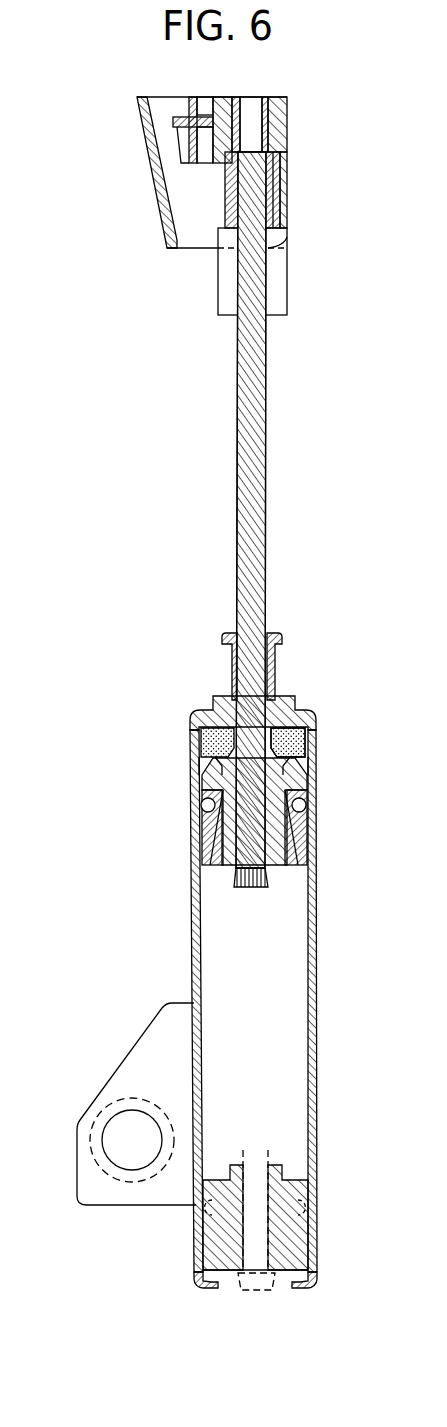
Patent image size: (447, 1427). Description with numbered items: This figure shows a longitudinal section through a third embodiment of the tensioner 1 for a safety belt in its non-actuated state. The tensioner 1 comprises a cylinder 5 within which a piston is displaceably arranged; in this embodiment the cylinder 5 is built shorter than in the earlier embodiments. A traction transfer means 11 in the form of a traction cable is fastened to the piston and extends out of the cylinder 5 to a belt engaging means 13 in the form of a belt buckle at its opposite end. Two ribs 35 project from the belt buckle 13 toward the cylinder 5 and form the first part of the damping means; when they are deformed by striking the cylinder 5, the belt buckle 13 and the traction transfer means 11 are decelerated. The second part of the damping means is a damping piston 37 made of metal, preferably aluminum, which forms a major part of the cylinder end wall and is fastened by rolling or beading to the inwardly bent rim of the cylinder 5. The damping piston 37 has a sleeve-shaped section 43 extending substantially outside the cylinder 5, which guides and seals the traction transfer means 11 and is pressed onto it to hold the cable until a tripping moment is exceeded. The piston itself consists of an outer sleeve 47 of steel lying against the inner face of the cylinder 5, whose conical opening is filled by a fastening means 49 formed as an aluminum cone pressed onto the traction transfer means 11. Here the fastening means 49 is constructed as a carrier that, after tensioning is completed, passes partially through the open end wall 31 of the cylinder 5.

The tensioner 1 is at (328, 934).
The cylinder 5 is at (317, 1020).
The traction transfer means 11 is at (258, 478).
The belt engaging means 13 is at (283, 122).
The open end wall 31 is at (217, 1286).
The ribs 35 is at (273, 282).
The damping piston 37 is at (312, 722).
The sleeve-shaped section 43 is at (274, 663).
The outer sleeve 47 is at (217, 845).
The fastening means 49 is at (290, 845).